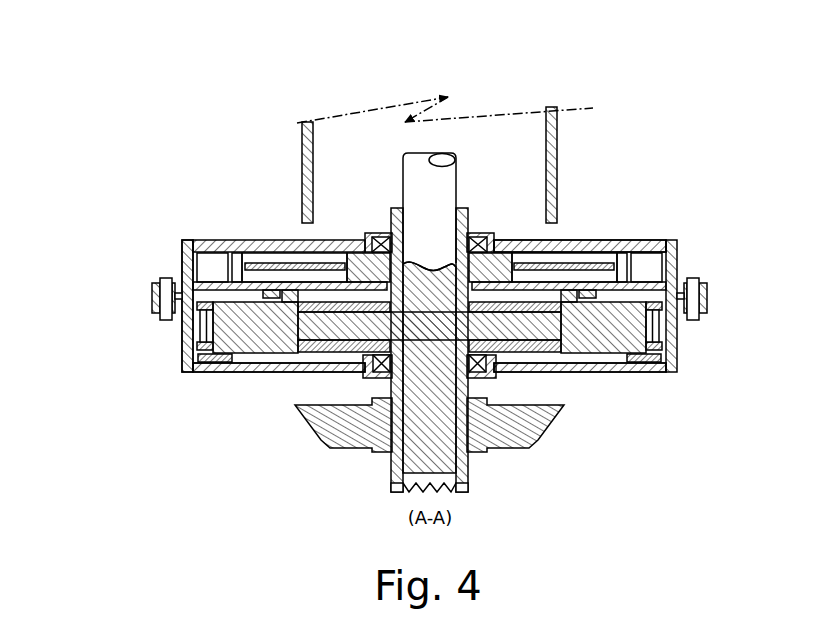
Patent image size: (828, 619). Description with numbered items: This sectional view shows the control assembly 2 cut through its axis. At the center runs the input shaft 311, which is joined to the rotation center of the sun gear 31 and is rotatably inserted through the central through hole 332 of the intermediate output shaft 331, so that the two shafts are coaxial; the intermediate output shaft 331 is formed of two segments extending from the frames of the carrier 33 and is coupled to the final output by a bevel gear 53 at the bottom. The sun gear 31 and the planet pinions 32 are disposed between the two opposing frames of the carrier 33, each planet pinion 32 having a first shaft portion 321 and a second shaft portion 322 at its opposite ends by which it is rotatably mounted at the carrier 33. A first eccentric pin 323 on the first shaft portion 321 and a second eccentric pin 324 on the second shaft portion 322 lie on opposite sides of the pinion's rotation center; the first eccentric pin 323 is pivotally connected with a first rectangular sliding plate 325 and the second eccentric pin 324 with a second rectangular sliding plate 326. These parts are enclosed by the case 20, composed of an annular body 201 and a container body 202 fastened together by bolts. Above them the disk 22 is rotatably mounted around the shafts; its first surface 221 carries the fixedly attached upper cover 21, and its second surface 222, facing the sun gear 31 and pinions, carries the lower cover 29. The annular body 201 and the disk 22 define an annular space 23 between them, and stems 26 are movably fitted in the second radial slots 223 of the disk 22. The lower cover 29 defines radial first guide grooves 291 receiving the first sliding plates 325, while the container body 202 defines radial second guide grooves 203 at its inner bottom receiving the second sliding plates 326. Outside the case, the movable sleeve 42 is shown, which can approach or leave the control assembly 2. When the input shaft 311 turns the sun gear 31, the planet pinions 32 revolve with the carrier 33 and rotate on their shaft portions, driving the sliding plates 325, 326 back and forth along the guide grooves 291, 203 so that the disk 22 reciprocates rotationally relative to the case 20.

The control assembly 2 is at (141, 297).
The case 20 is at (200, 376).
The annular body 201 is at (186, 264).
The container body 202 is at (182, 331).
The second guide grooves 203 is at (283, 360).
The upper cover 21 is at (622, 292).
The disk 22 is at (500, 262).
The first surface 221 is at (366, 256).
The second surface 222 is at (496, 332).
The second radial slots 223 is at (238, 264).
The annular space 23 is at (212, 263).
The stems 26 is at (286, 265).
The lower cover 29 is at (640, 283).
The first guide grooves 291 is at (652, 288).
The sun gear 31 is at (278, 337).
The input shaft 311 is at (446, 178).
The planet pinions 32 is at (677, 330).
The first shaft portion 321 is at (636, 284).
The second shaft portion 322 is at (600, 356).
The first eccentric pin 323 is at (566, 292).
The second eccentric pin 324 is at (630, 358).
The first rectangular sliding plate 325 is at (581, 292).
The second rectangular sliding plate 326 is at (650, 364).
The carrier 33 is at (173, 365).
The intermediate output shaft 331 is at (466, 467).
The central through hole 332 is at (392, 462).
The movable sleeve 42 is at (557, 113).
The bevel gear 53 is at (336, 426).